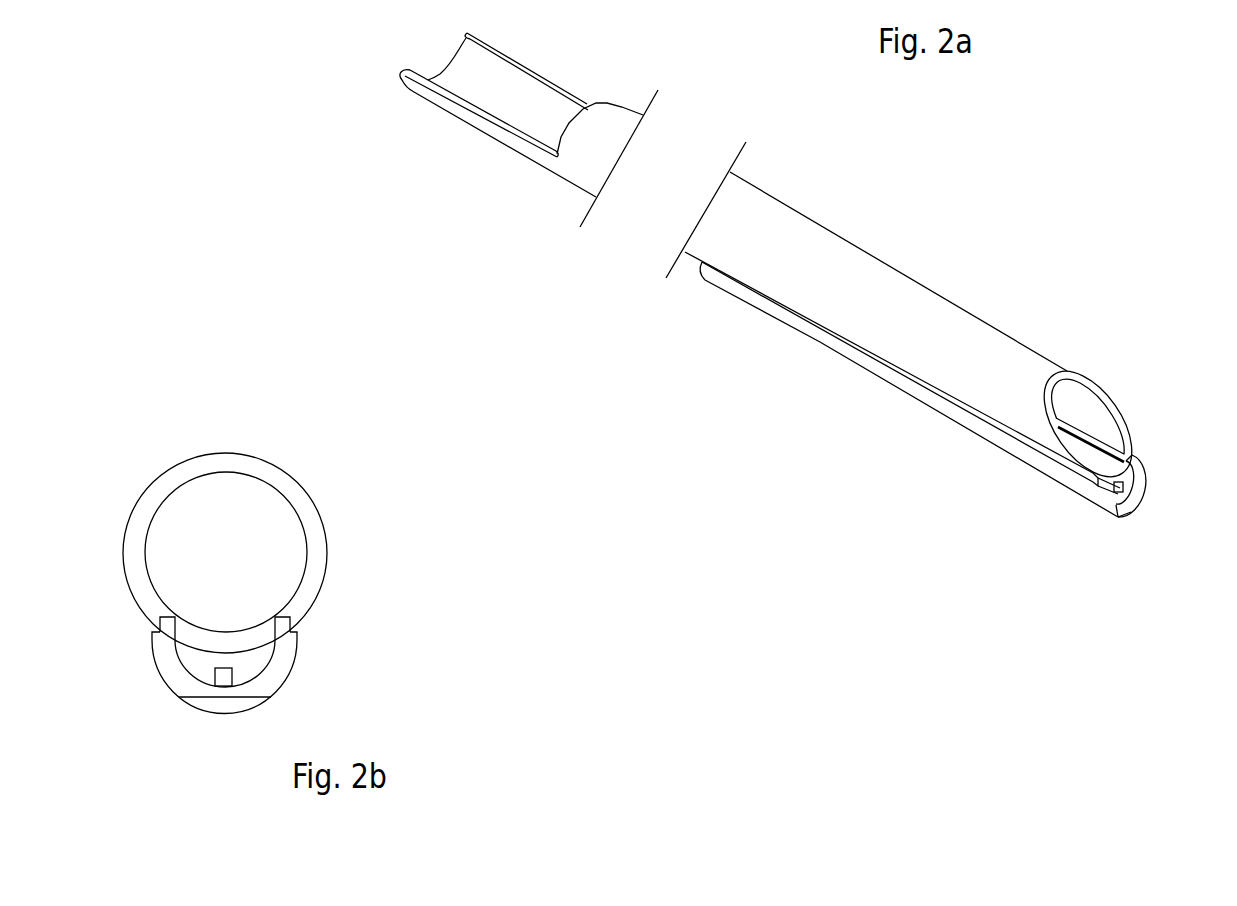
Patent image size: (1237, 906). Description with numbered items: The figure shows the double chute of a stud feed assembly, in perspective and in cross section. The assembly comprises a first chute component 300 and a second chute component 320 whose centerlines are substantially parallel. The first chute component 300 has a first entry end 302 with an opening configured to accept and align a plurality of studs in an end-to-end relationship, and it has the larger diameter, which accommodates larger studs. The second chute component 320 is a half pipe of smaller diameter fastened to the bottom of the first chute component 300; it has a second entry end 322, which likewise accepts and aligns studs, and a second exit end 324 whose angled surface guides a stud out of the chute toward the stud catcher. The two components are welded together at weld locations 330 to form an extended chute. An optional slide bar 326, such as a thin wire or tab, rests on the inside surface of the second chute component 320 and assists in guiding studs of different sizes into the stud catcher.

In FIG. 2a, the first chute component 300 is at (816, 226).
In FIG. 2b, the first chute component 300 is at (294, 480).
In FIG. 2a, the first entry end 302 is at (501, 44).
In FIG. 2a, the second chute component 320 is at (956, 419).
In FIG. 2b, the second chute component 320 is at (293, 666).
In FIG. 2a, the second entry end 322 is at (705, 281).
In FIG. 2a, the second exit end 324 is at (1127, 517).
In FIG. 2a, the slide bar 326 is at (1121, 491).
In FIG. 2b, the slide bar 326 is at (221, 678).
In FIG. 2b, the weld locations 330 is at (159, 624).